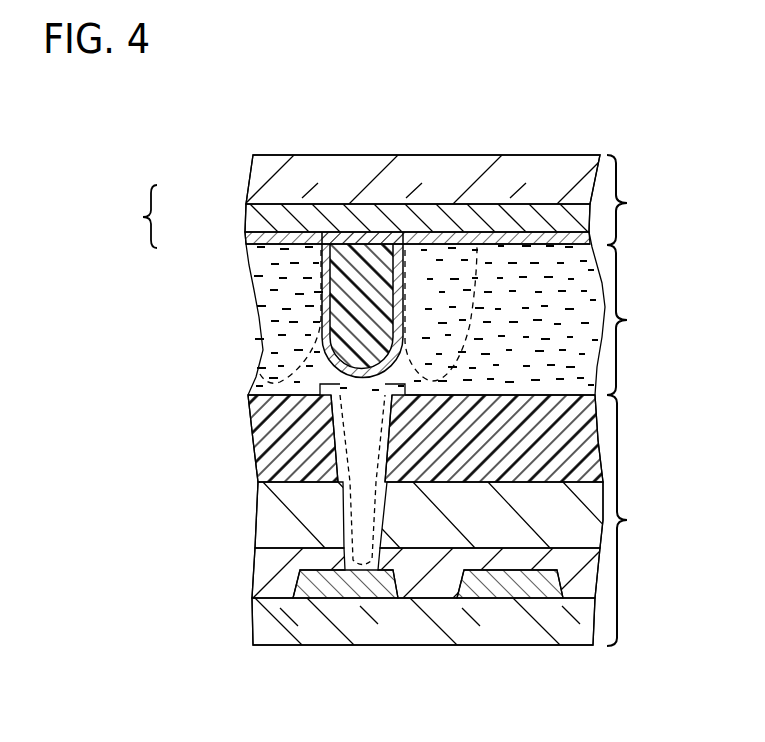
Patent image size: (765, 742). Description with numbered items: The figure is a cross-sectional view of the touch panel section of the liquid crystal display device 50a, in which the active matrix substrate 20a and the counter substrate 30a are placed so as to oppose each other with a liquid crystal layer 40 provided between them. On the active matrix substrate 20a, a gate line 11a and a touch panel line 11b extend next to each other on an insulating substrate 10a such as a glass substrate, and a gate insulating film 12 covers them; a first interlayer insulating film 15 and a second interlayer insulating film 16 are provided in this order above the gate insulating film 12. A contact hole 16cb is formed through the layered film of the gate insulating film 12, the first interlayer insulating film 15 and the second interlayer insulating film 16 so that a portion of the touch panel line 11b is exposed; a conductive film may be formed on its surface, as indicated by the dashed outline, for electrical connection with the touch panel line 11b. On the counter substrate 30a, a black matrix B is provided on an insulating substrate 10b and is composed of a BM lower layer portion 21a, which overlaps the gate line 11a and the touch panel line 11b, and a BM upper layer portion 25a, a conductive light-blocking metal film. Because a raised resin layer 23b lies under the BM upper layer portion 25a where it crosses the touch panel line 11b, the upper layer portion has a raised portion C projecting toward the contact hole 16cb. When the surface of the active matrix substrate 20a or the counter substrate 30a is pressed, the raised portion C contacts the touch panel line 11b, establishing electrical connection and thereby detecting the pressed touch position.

The liquid crystal display device 50a is at (287, 99).
The insulating substrate 10b is at (247, 177).
The BM lower layer portion 21a is at (247, 218).
The BM upper layer portion 25a is at (247, 240).
The black matrix B is at (138, 216).
The raised resin layer 23b is at (361, 248).
The liquid crystal layer 40 is at (455, 319).
The raised portion C is at (322, 367).
The second interlayer insulating film 16 is at (258, 443).
The contact hole 16cb is at (322, 458).
The first interlayer insulating film 15 is at (258, 521).
The gate insulating film 12 is at (255, 579).
The insulating substrate 10a is at (255, 625).
The touch panel line 11b is at (343, 592).
The gate line 11a is at (508, 590).
The counter substrate 30a is at (643, 200).
The active matrix substrate 20a is at (643, 520).